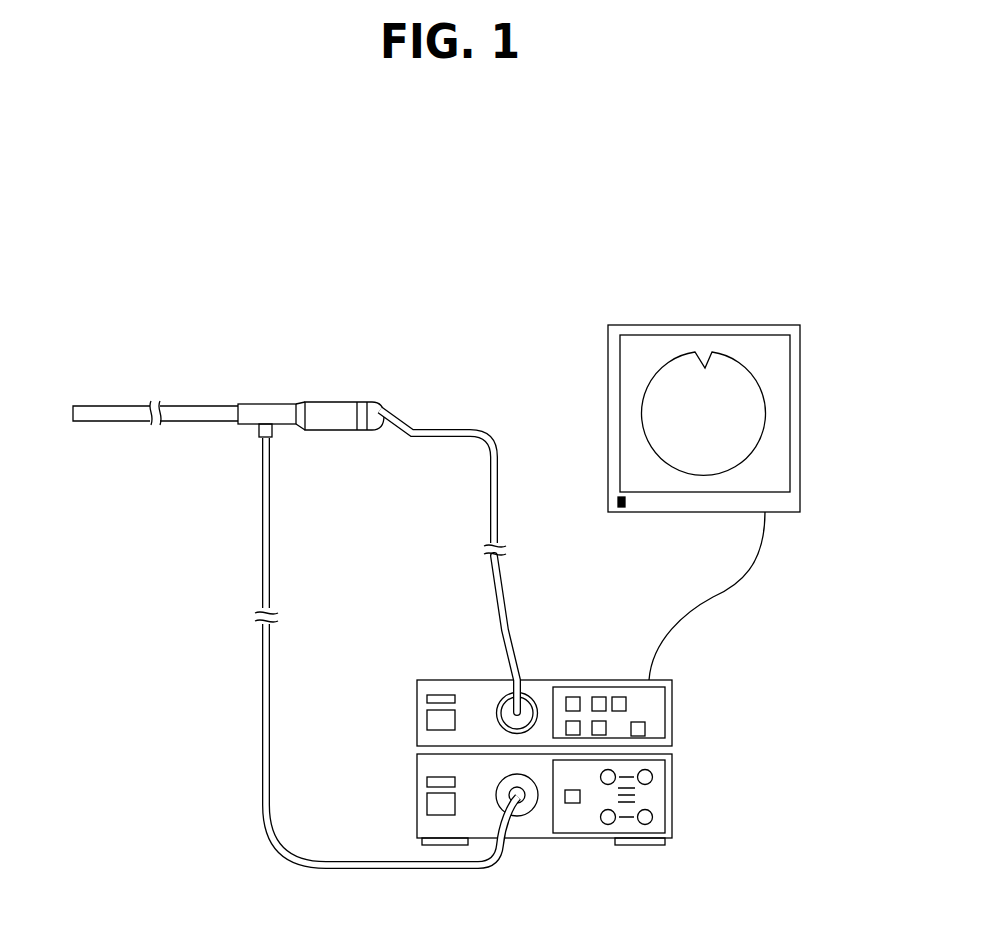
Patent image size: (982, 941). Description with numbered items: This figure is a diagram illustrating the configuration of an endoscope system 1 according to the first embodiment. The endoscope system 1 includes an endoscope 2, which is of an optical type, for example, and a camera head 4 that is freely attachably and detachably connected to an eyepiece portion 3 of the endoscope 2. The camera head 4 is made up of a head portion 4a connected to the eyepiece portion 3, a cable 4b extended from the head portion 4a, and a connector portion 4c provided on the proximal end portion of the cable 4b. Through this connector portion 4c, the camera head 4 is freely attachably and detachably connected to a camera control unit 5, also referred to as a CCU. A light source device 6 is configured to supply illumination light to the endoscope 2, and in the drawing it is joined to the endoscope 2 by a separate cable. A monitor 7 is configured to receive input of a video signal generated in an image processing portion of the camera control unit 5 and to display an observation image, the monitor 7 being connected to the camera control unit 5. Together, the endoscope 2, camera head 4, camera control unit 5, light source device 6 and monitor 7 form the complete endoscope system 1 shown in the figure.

The endoscope system 1 is at (578, 237).
The endoscope 2 is at (295, 606).
The eyepiece portion 3 is at (301, 404).
The camera head 4 is at (443, 526).
The head portion 4a is at (372, 402).
The cable 4b is at (488, 435).
The connector portion 4c is at (533, 697).
The camera control unit 5 is at (672, 718).
The light source device 6 is at (672, 798).
The monitor 7 is at (706, 325).